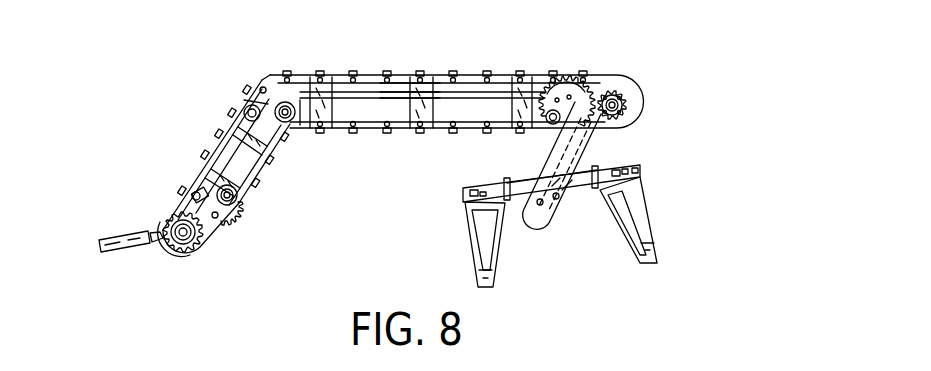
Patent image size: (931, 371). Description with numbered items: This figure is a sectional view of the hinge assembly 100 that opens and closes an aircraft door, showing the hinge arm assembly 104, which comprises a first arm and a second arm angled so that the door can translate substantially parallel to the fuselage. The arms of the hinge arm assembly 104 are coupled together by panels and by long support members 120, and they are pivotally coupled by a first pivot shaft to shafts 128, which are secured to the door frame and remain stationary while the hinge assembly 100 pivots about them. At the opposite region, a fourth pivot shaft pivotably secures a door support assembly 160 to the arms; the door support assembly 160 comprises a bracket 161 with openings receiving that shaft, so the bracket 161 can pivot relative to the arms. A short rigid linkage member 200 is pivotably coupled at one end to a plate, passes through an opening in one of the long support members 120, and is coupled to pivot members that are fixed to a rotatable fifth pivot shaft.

The hinge assembly 100 is at (176, 94).
The hinge arm assembly 104 is at (328, 63).
The short rigid linkage member 200 is at (395, 88).
The long support member 120 is at (333, 108).
The bracket 161 is at (612, 136).
The door support assembly 160 is at (662, 204).
The shaft 128 is at (115, 230).